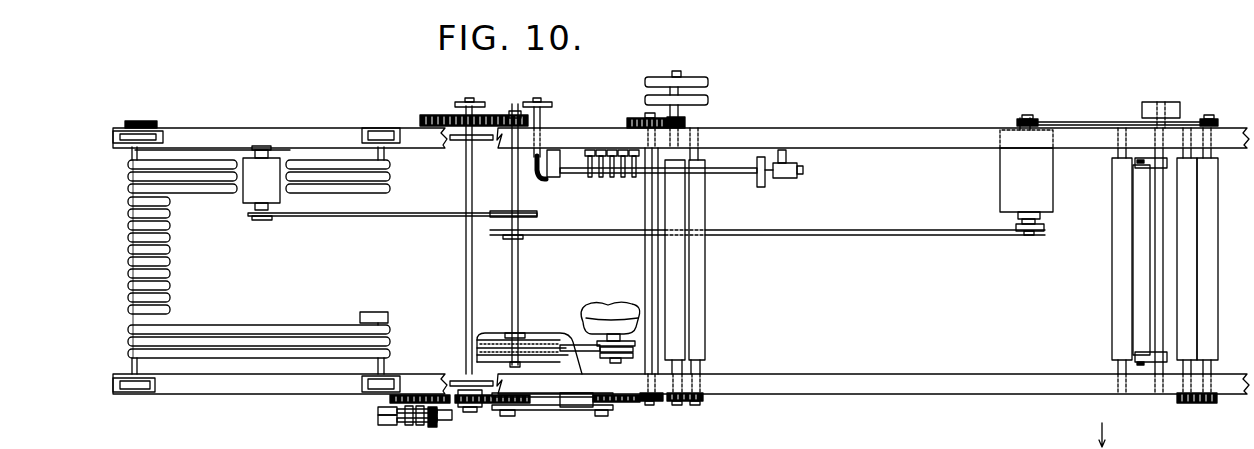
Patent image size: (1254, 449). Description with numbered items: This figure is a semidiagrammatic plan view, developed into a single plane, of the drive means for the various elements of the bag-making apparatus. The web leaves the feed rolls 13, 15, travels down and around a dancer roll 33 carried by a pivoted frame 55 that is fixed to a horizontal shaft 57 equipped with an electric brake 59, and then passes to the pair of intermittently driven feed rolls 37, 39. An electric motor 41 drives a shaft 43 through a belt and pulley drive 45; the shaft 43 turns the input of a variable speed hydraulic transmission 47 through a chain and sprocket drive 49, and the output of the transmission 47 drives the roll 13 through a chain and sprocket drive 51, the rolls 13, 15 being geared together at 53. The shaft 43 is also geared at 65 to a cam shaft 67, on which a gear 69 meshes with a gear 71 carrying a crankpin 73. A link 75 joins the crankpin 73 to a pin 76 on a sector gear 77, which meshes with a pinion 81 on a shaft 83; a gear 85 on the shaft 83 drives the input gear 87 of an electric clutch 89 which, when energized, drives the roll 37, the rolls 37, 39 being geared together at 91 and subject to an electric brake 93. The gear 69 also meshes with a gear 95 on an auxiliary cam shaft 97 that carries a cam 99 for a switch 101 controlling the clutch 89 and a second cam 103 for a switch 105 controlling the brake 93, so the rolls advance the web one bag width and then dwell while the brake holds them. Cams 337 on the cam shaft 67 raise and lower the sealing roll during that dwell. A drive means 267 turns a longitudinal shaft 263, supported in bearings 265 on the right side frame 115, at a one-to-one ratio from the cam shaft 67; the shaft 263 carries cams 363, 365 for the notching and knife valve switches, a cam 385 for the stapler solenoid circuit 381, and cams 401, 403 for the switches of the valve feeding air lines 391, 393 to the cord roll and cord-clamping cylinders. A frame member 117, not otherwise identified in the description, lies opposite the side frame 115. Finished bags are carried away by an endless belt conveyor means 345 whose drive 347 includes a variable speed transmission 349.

The feed roll 13 is at (1197, 258).
The feed roll 15 is at (1210, 286).
The dancer roll 33 is at (1136, 326).
The intermittently driven feed roll 37 is at (678, 290).
The intermittently driven feed roll 39 is at (698, 324).
The electric motor 41 is at (595, 308).
The shaft 43 is at (519, 269).
The belt and pulley drive 45 is at (543, 345).
The variable speed hydraulic transmission 47 is at (1000, 178).
The chain and sprocket drive 49 is at (774, 232).
The chain and sprocket drive 51 is at (1090, 121).
The gearing 53 is at (1200, 403).
The pivoted frame 55 is at (1150, 160).
The horizontal shaft 57 is at (1158, 240).
The electric brake 59 is at (1146, 103).
The gearing 65 is at (490, 114).
The cam shaft 67 is at (466, 248).
The gear 69 is at (481, 407).
The gear 71 is at (512, 403).
The crankpin 73 is at (488, 420).
The link 75 is at (552, 411).
The pin 76 is at (600, 417).
The sector gear 77 is at (624, 403).
The pinion 81 is at (656, 403).
The shaft 83 is at (646, 286).
The gear 85 is at (628, 119).
The input gear 87 is at (686, 122).
The electric clutch 89 is at (708, 100).
The gearing 91 is at (687, 405).
The electric brake 93 is at (706, 80).
The gear 95 is at (390, 400).
The auxiliary cam shaft 97 is at (410, 426).
The cam 99 is at (438, 414).
The switch 101 is at (378, 411).
The second cam 103 is at (426, 426).
The switch 105 is at (381, 425).
The right side frame 115 is at (819, 388).
The upper beam 117 is at (843, 135).
The shaft 263 is at (728, 173).
The bearings 265 is at (548, 177).
The drive means 267 is at (549, 102).
The cams 337 is at (463, 141).
The endless belt conveyor means 345 is at (210, 158).
The drive 347 is at (366, 218).
The variable speed transmission 349 is at (243, 198).
The cam 363 is at (589, 177).
The cam 365 is at (600, 177).
The electrical circuit 381 is at (712, 448).
The cam 385 is at (611, 177).
The air line 391 is at (803, 445).
The air line 393 is at (621, 445).
The cam 401 is at (622, 177).
The cam 403 is at (633, 178).